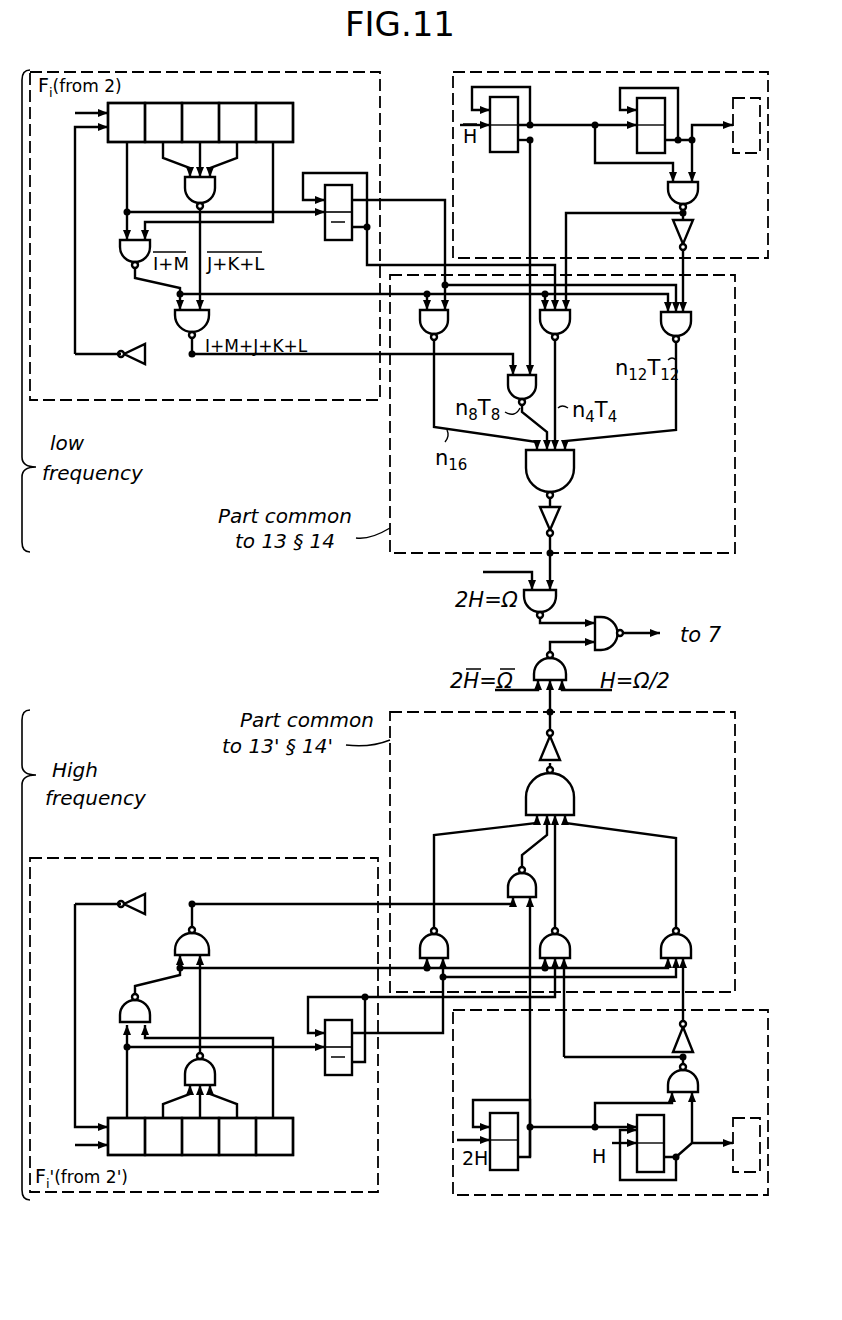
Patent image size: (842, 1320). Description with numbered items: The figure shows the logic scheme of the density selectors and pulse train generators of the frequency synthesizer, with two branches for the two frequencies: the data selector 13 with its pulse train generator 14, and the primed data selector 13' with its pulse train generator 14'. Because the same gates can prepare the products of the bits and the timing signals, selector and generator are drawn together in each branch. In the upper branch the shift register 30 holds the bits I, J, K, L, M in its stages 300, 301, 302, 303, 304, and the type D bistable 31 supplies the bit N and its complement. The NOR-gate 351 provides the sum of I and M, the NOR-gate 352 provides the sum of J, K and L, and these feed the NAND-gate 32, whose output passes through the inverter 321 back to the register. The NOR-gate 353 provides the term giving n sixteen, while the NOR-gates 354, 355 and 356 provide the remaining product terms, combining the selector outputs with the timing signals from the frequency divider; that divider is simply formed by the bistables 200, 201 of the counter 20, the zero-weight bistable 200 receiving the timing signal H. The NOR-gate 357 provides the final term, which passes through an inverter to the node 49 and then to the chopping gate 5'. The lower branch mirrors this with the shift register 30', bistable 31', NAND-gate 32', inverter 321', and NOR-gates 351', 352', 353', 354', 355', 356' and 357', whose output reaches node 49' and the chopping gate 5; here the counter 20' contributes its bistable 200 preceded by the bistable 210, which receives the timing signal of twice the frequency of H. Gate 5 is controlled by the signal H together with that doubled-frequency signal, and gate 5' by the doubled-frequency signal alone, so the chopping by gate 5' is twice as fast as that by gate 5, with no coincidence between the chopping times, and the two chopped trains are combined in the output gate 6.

The data selector 13 is at (205, 254).
The pulse train generator 14 is at (614, 187).
The data selector 13' is at (204, 1009).
The pulse train generator 14' is at (617, 1086).
The shift register 30 is at (190, 138).
The shift register 30' is at (190, 1121).
The register stage I 300 is at (128, 103).
The register stage J 301 is at (165, 103).
The register stage K 302 is at (202, 103).
The register stage L 303 is at (239, 103).
The register stage M 304 is at (276, 103).
The type D bistable 31 is at (337, 224).
The type D bistable 31' is at (338, 1051).
The NAND-gate 32 is at (174, 323).
The NAND-gate 32' is at (174, 941).
The inverter 321 is at (114, 368).
The inverter 321' is at (113, 891).
The NOR-gate 351 is at (179, 207).
The NOR-gate 351' is at (117, 1008).
The NOR-gate 352 is at (193, 175).
The NOR-gate 352' is at (191, 1085).
The NOR-gate 353 is at (457, 325).
The NOR-gate 353' is at (458, 942).
The NOR-gate 354 is at (579, 325).
The NOR-gate 354' is at (580, 942).
The NOR-gate 355 is at (502, 384).
The NOR-gate 355' is at (499, 884).
The NOR-gate 356 is at (695, 327).
The NOR-gate 356' is at (699, 942).
The NOR-gate 357 is at (576, 474).
The NOR-gate 357' is at (576, 791).
The counter 20 is at (602, 111).
The counter 20' is at (603, 1138).
The bistable 200 is at (534, 145).
The bistable 201 is at (637, 145).
The bistable 210 is at (520, 1165).
The output node 49 is at (572, 544).
The output node 49' is at (575, 727).
The chopping gate 5 is at (559, 666).
The chopping gate 5' is at (554, 598).
The NAND gate 6 is at (612, 618).